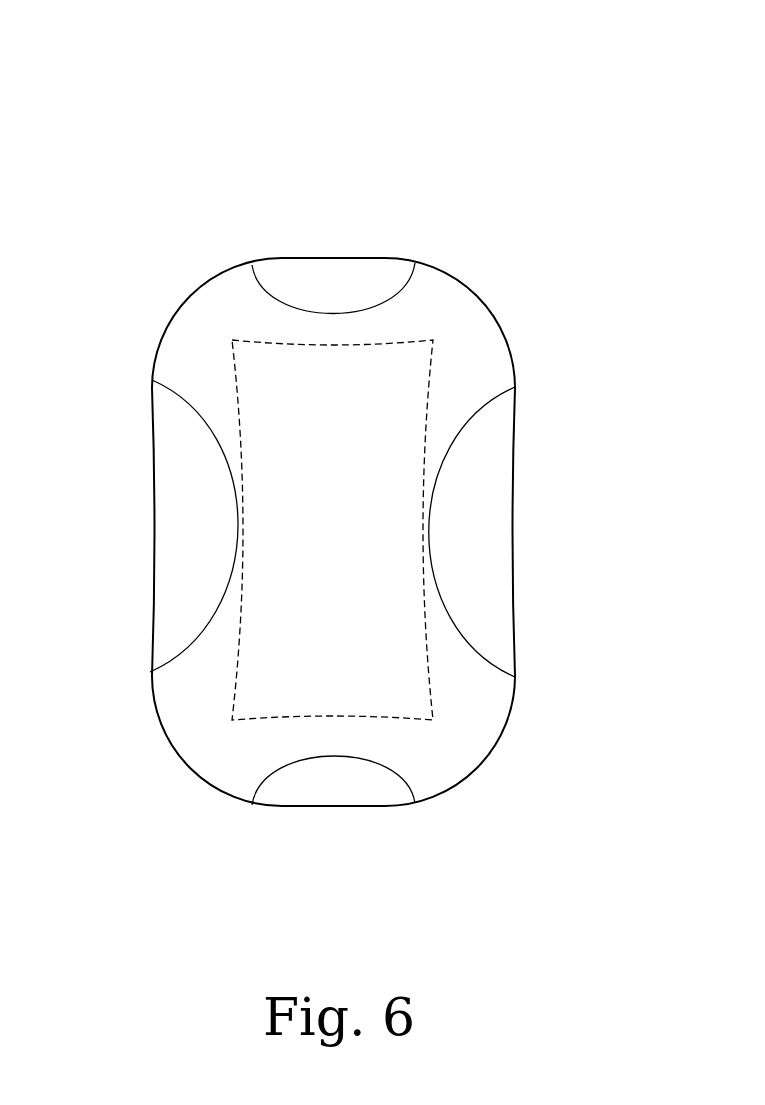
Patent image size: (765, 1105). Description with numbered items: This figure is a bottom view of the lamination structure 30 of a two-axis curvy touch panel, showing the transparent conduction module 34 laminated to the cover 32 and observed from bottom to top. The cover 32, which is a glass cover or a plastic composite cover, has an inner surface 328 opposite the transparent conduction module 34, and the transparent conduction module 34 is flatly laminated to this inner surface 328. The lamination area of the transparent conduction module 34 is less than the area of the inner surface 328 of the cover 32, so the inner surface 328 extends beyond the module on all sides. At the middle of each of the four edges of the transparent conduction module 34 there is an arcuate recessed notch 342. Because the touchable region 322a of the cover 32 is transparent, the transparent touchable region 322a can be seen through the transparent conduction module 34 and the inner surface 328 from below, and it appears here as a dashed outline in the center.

The lamination structure 30 is at (137, 128).
The cover 32 is at (367, 256).
The transparent touchable region 322a is at (377, 396).
The transparent conduction module 34 is at (488, 340).
The arcuate recessed notch 342 is at (268, 268).
The inner surface 328 is at (488, 568).